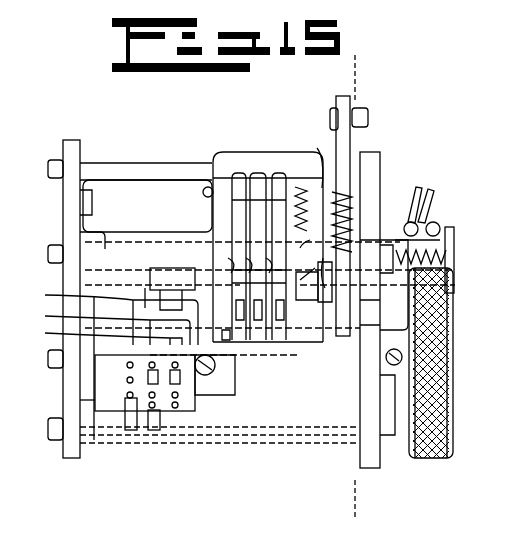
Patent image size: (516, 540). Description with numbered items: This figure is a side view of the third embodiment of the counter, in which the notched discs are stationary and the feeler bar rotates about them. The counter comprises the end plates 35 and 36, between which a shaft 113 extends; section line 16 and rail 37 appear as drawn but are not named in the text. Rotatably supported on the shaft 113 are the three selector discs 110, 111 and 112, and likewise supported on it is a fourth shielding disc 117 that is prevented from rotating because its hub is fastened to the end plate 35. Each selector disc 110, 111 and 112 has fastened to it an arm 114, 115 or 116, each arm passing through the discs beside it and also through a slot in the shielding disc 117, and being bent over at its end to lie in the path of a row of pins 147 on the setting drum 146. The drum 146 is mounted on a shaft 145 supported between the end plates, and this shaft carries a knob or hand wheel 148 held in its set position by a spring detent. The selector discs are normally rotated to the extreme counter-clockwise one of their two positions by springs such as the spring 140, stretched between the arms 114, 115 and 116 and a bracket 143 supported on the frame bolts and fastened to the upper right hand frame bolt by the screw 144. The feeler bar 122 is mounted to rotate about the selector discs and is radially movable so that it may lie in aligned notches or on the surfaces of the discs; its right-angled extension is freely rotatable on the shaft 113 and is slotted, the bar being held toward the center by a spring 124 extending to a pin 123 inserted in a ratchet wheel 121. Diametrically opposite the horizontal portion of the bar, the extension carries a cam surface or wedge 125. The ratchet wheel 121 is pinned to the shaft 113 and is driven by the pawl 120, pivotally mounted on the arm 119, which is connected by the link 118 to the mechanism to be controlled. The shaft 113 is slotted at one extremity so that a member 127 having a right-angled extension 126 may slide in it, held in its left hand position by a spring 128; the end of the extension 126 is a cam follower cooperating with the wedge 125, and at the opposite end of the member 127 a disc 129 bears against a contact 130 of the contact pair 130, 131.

The section line 16 is at (362, 497).
The end plate 35 is at (68, 147).
The end plate 36 is at (372, 152).
The rail 37 is at (278, 440).
The selector disc 110 is at (276, 168).
The selector disc 111 is at (256, 170).
The selector disc 112 is at (238, 170).
The shaft 113 is at (103, 233).
The arm 114 is at (98, 334).
The arm 115 is at (102, 324).
The arm 116 is at (106, 314).
The shielding disc 117 is at (215, 152).
The link 118 is at (362, 110).
The arm 119 is at (343, 142).
The pawl 120 is at (300, 248).
The ratchet wheel 121 is at (325, 288).
The feeler bar 122 is at (317, 148).
The pin 123 is at (332, 198).
The spring 124 is at (305, 182).
The cam surface or wedge 125 is at (315, 320).
The right-angled extension 126 is at (305, 322).
The member 127 is at (398, 270).
The spring 128 is at (455, 240).
The disc 129 is at (450, 253).
The contact 130 is at (440, 226).
The contact 131 is at (422, 212).
The spring 140 is at (186, 285).
The bracket 143 is at (205, 218).
The screw 144 is at (203, 190).
The shaft 145 is at (80, 375).
The setting drum 146 is at (80, 395).
The pins 147 is at (152, 418).
The knob or hand wheel 148 is at (455, 400).